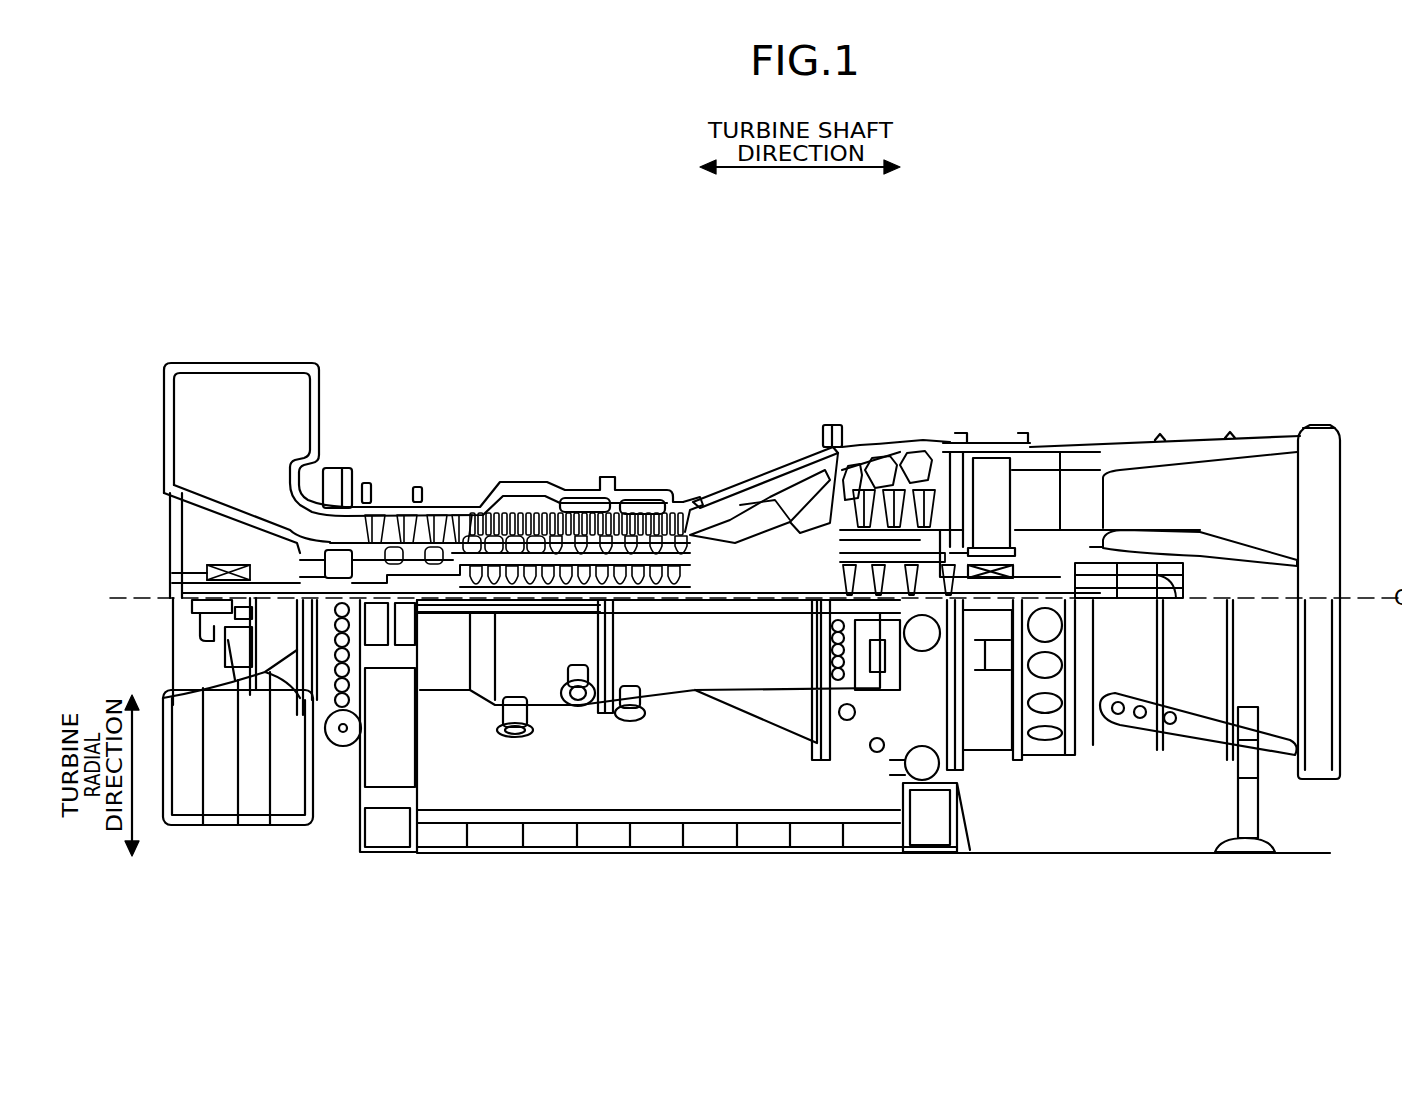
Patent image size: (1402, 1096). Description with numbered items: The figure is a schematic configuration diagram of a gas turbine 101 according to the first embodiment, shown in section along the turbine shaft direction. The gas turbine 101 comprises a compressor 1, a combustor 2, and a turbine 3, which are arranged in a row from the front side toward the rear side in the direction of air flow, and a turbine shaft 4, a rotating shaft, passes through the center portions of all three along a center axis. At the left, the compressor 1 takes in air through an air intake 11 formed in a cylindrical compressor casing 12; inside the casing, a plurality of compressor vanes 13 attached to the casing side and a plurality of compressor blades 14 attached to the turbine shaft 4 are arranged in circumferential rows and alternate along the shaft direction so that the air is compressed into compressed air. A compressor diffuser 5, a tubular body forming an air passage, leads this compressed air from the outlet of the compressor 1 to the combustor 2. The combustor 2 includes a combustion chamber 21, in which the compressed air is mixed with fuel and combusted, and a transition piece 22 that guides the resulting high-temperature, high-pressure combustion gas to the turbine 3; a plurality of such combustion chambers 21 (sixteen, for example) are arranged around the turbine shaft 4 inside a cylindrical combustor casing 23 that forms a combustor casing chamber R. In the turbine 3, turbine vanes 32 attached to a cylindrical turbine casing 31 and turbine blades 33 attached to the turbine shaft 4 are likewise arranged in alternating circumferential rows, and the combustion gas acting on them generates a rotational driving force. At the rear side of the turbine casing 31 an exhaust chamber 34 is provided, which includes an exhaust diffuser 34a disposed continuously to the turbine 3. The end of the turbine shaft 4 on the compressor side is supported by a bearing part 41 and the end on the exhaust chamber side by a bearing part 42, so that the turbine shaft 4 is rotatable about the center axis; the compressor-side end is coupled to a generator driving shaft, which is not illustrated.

The compressor 1 is at (393, 440).
The combustor 2 is at (688, 470).
The turbine 3 is at (960, 425).
The turbine shaft 4 is at (752, 570).
The compressor diffuser 5 is at (690, 470).
The air intake 11 is at (185, 432).
The compressor casing 12 is at (583, 488).
The compressor vanes 13 is at (398, 508).
The compressor blades 14 is at (448, 515).
The combustion chamber 21 is at (727, 528).
The transition piece 22 is at (778, 525).
The combustor casing 23 is at (713, 520).
The combustor casing chamber R is at (762, 515).
The turbine casing 31 is at (905, 440).
The turbine vanes 32 is at (805, 535).
The turbine blades 33 is at (850, 530).
The exhaust chamber 34 is at (1195, 430).
The exhaust diffuser 34a is at (1055, 488).
The bearing part 41 is at (205, 578).
The bearing part 42 is at (1298, 547).
The gas turbine 101 is at (940, 360).